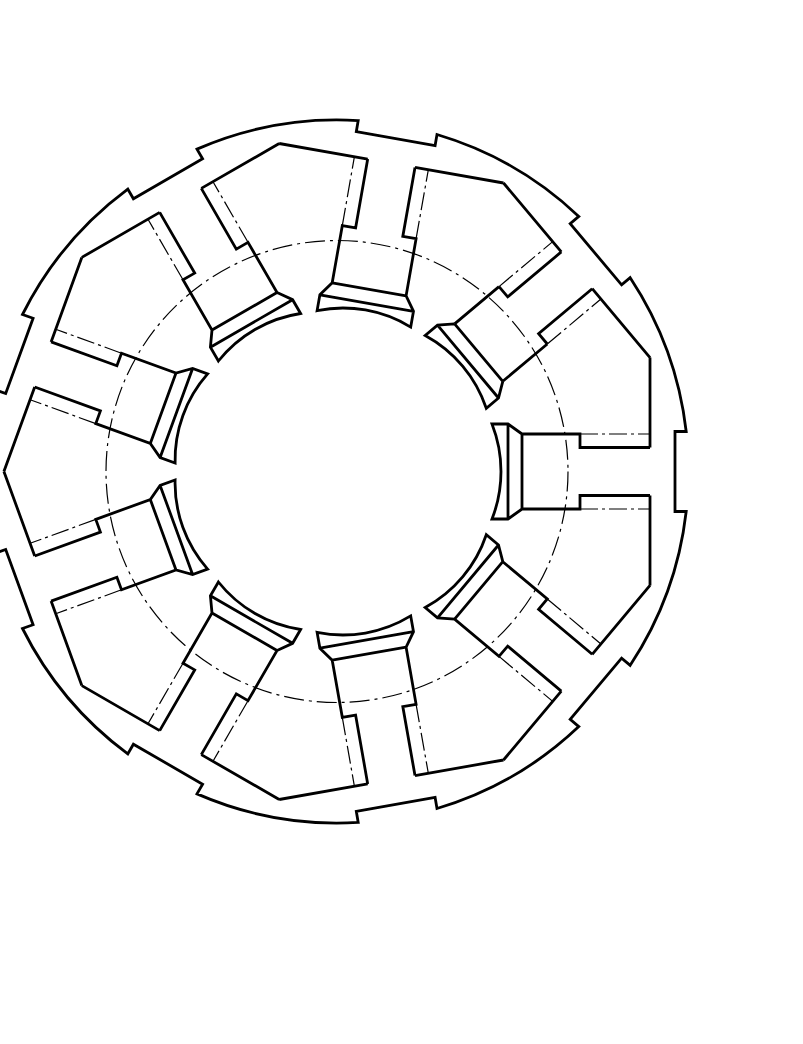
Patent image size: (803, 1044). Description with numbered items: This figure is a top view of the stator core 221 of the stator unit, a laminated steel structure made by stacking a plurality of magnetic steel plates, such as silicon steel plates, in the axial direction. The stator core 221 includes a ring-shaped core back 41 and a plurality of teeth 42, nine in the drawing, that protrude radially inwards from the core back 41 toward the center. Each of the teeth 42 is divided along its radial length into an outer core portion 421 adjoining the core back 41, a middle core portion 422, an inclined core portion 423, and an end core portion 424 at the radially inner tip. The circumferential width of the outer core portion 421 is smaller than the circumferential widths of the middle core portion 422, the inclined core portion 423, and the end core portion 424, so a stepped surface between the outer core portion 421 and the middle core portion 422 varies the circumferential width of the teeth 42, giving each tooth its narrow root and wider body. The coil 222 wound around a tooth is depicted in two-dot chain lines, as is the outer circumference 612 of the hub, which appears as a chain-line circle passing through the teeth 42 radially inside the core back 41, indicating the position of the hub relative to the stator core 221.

The stator core 221 is at (143, 101).
The core back 41 is at (635, 318).
The teeth 42 is at (646, 57).
The outer core portion 421 is at (557, 287).
The middle core portion 422 is at (487, 325).
The inclined core portion 423 is at (455, 325).
The end core portion 424 is at (432, 325).
The coil 222 is at (573, 323).
The outer circumference of the hub 612 is at (290, 237).